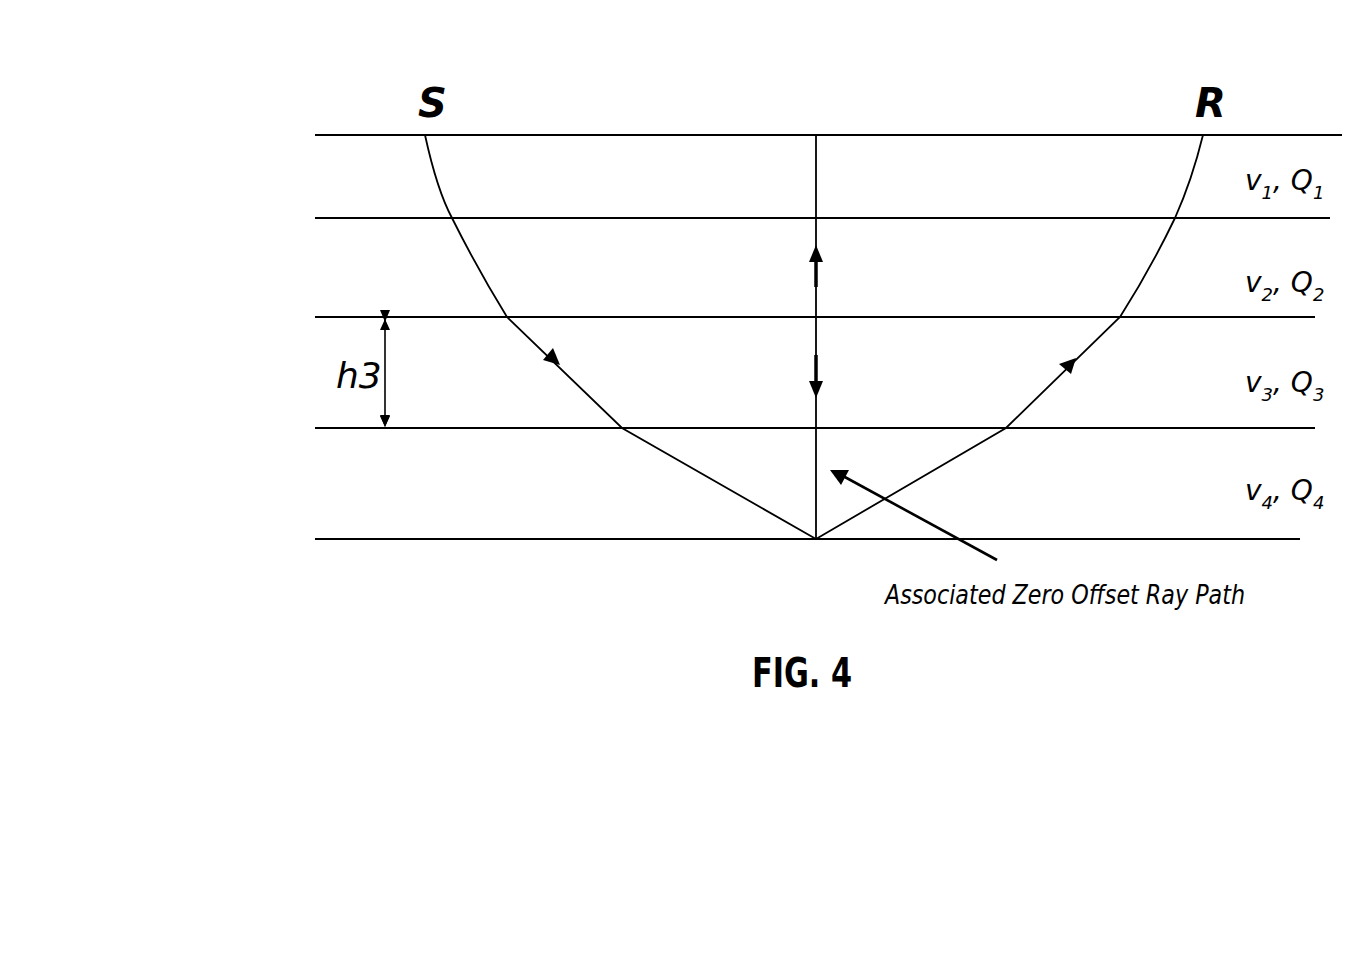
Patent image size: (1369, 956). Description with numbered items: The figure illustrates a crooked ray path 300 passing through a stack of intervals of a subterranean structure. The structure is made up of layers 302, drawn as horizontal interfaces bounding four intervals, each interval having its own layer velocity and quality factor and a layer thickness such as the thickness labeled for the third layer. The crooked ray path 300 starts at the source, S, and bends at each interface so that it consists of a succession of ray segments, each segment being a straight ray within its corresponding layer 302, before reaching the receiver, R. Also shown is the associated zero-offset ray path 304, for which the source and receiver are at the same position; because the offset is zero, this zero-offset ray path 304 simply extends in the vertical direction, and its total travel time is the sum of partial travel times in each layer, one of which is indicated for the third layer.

The crooked ray path 300 is at (566, 396).
The layers 302 is at (338, 484).
The zero-offset ray path 304 is at (816, 184).